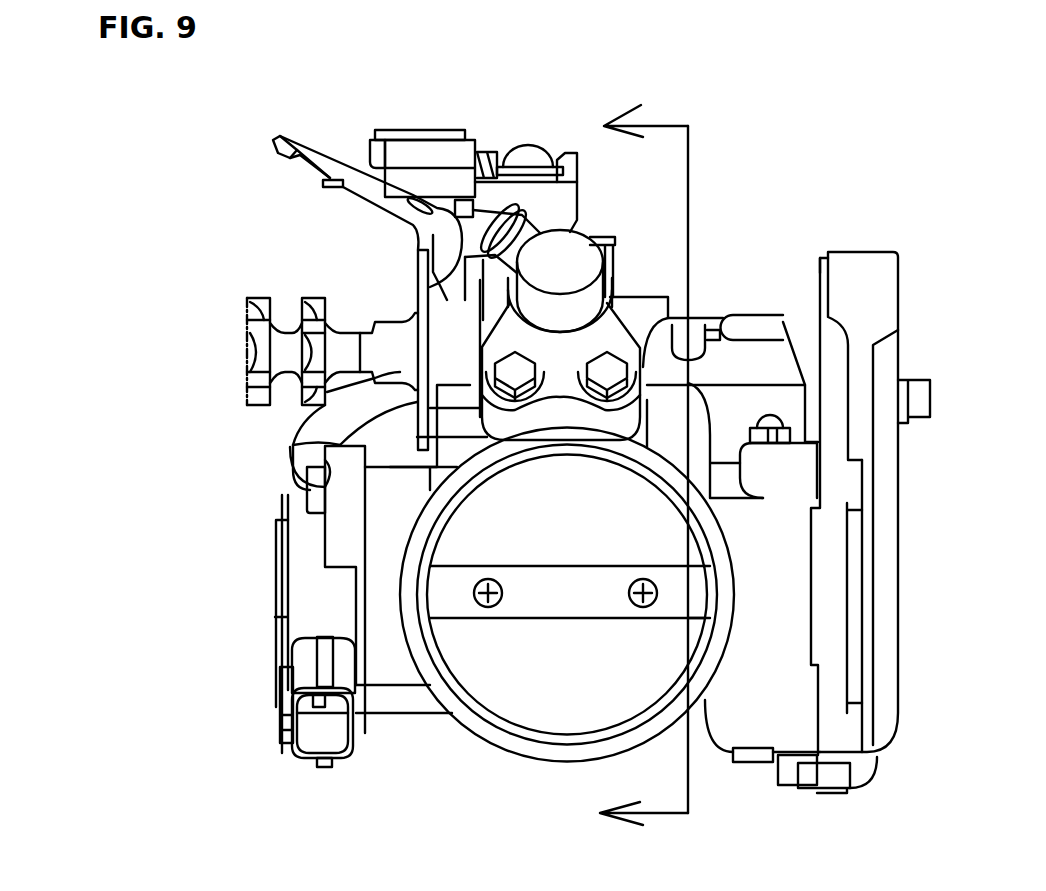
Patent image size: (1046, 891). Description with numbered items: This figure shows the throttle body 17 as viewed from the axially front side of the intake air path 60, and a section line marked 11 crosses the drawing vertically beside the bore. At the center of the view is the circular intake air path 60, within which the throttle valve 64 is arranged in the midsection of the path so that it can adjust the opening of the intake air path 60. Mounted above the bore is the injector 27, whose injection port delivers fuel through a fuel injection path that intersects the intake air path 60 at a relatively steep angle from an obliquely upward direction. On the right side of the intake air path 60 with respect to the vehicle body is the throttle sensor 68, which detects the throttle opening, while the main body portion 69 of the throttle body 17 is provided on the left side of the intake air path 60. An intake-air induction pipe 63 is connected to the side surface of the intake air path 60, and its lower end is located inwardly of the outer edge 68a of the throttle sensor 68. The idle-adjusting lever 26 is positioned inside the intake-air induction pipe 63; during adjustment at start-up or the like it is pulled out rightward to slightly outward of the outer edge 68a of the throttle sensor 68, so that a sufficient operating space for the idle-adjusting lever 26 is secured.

The section line XI-XI 11 is at (616, 457).
The throttle body 17 is at (762, 255).
The idle-adjusting lever 26 is at (316, 300).
The injector 27 is at (572, 258).
The intake air path 60 is at (477, 717).
The intake-air induction pipe 63 is at (297, 437).
The throttle valve 64 is at (530, 703).
The throttle sensor 68 is at (312, 605).
The outer edge 68a is at (276, 582).
The main body portion 69 is at (755, 710).